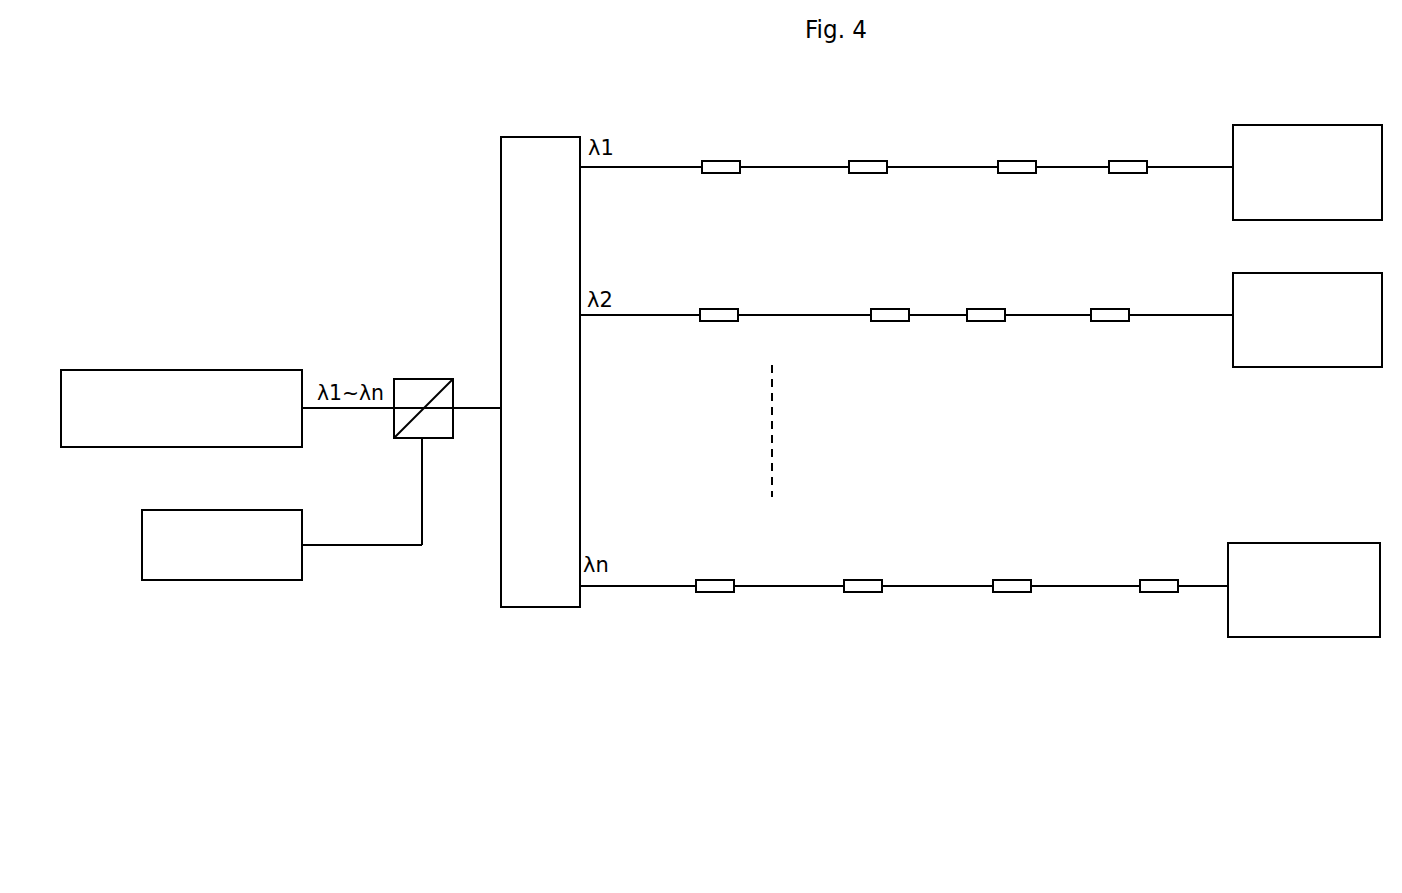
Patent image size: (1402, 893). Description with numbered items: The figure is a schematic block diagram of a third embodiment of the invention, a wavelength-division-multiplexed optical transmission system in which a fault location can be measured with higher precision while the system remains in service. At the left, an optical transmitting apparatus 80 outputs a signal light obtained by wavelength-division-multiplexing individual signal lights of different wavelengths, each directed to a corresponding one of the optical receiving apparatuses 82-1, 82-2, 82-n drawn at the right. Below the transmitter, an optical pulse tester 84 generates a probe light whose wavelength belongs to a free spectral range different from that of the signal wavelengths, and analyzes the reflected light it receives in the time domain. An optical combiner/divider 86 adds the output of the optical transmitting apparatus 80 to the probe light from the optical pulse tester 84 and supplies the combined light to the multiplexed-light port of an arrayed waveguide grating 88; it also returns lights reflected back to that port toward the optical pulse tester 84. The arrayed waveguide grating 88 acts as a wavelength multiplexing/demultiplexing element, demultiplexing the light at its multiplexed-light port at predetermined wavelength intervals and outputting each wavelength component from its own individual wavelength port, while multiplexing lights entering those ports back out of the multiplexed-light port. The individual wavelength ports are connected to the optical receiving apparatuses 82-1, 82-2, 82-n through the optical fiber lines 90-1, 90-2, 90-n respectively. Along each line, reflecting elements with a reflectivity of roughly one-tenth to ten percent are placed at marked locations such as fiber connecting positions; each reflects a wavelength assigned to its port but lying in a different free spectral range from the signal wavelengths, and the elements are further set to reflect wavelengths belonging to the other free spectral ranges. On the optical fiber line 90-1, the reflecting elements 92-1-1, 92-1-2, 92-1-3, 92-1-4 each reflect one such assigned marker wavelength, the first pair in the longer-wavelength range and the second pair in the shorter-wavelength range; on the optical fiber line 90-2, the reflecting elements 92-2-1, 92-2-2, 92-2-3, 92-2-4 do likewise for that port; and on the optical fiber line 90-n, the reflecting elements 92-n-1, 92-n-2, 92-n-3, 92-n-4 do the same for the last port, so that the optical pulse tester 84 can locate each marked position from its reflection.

The optical transmitting apparatus 80 is at (212, 372).
The optical receiving apparatus 82-1 is at (1313, 130).
The optical receiving apparatus 82-2 is at (1315, 278).
The optical receiving apparatus 82-n is at (1307, 548).
The optical pulse tester 84 is at (222, 582).
The optical combiner/divider 86 is at (428, 380).
The arrayed waveguide grating 88 is at (510, 157).
The optical fiber line 90-1 is at (957, 165).
The optical fiber line 90-2 is at (940, 313).
The optical fiber line 90-n is at (930, 585).
The reflecting element 92-1-1 is at (720, 160).
The reflecting element 92-1-2 is at (866, 160).
The reflecting element 92-1-3 is at (1022, 162).
The reflecting element 92-1-4 is at (1130, 162).
The reflecting element 92-2-1 is at (721, 310).
The reflecting element 92-2-2 is at (890, 310).
The reflecting element 92-2-3 is at (995, 305).
The reflecting element 92-2-4 is at (1115, 308).
The reflecting element 92-n-1 is at (715, 578).
The reflecting element 92-n-2 is at (862, 578).
The reflecting element 92-n-3 is at (1018, 580).
The reflecting element 92-n-4 is at (1160, 582).